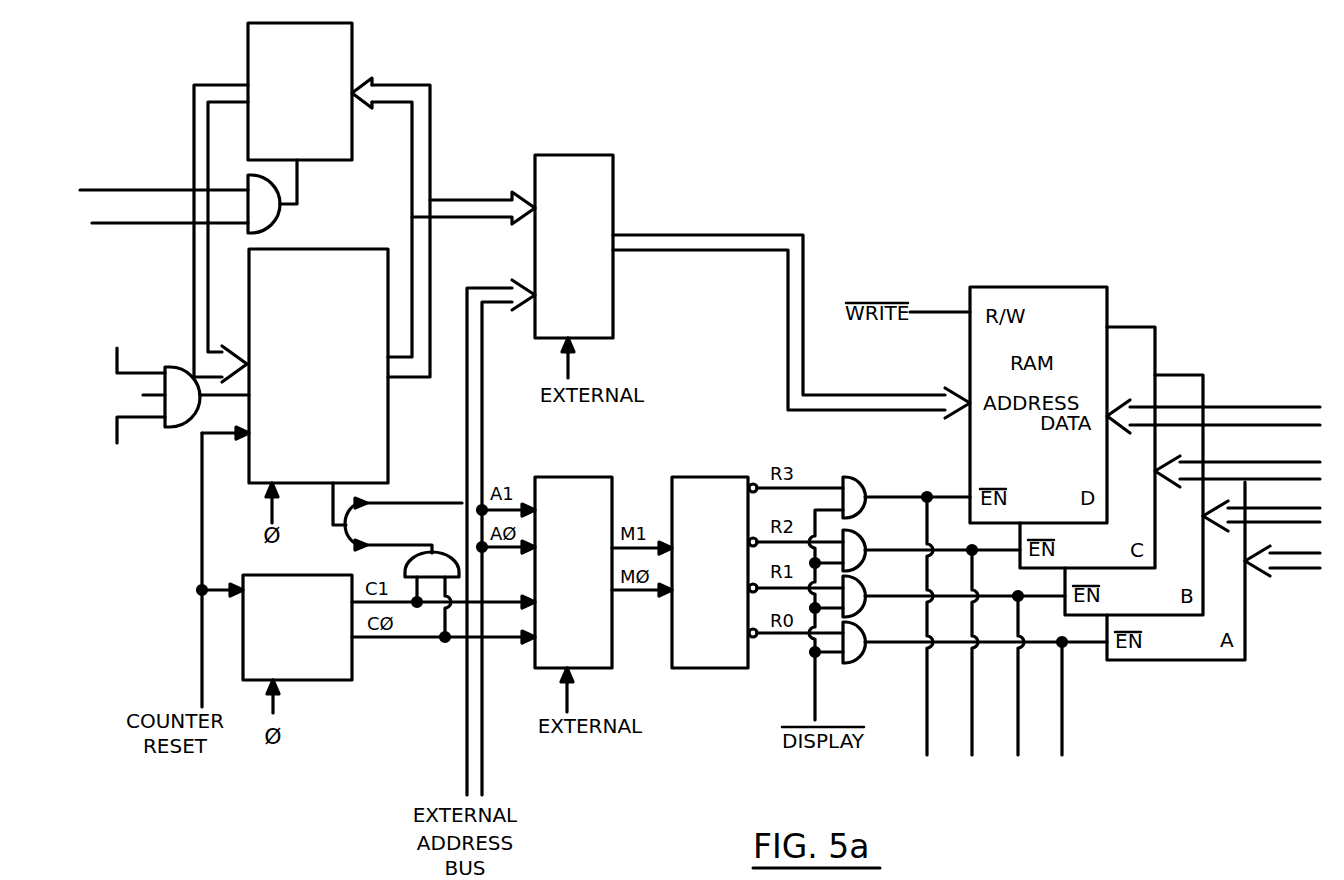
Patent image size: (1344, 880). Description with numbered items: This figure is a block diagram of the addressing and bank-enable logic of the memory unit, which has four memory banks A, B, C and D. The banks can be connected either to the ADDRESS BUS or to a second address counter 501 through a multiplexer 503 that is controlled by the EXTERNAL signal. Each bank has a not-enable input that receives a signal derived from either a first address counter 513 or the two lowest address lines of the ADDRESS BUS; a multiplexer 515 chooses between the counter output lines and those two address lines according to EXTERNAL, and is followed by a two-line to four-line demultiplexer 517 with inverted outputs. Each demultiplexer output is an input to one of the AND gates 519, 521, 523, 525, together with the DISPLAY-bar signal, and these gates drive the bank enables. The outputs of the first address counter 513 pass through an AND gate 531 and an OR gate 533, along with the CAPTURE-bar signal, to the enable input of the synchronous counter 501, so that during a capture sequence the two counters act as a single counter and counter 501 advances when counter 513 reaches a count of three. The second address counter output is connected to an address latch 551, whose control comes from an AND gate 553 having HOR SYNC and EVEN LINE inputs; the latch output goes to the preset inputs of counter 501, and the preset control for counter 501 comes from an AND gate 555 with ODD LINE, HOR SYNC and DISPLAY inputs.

The address latch 551 is at (300, 91).
The AND gate 553 is at (283, 211).
The second address counter 501 is at (318, 366).
The AND gate 555 is at (177, 428).
The first address counter 513 is at (297, 627).
The AND gate 531 is at (405, 570).
The OR gate 533 is at (393, 503).
The multiplexer 503 is at (574, 246).
The multiplexer 515 is at (573, 572).
The demultiplexer 517 is at (714, 572).
The AND gate 519 is at (858, 478).
The AND gate 521 is at (862, 540).
The AND gate 523 is at (862, 586).
The AND gate 525 is at (862, 630).